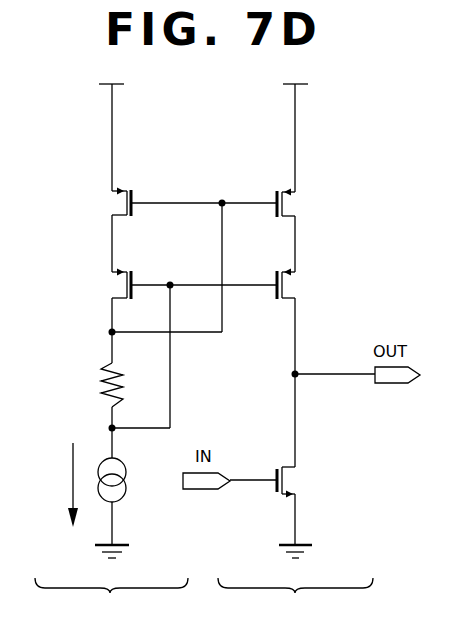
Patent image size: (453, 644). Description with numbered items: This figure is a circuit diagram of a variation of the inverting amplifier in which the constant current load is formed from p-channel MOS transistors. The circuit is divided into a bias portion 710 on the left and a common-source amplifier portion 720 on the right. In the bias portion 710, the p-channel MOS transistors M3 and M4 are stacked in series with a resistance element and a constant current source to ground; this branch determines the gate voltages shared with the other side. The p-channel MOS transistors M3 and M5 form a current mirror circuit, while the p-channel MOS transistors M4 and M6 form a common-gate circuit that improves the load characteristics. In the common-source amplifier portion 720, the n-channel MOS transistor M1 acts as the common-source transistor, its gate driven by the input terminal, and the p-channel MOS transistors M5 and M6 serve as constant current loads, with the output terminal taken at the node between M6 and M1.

The p-channel MOS transistor M3 is at (98, 211).
The p-channel MOS transistor M4 is at (98, 291).
The p-channel MOS transistor M5 is at (306, 212).
The p-channel MOS transistor M6 is at (306, 294).
The n-channel MOS transistor M1 is at (308, 486).
The bias portion 710 is at (111, 602).
The common-source amplifier portion 720 is at (295, 602).